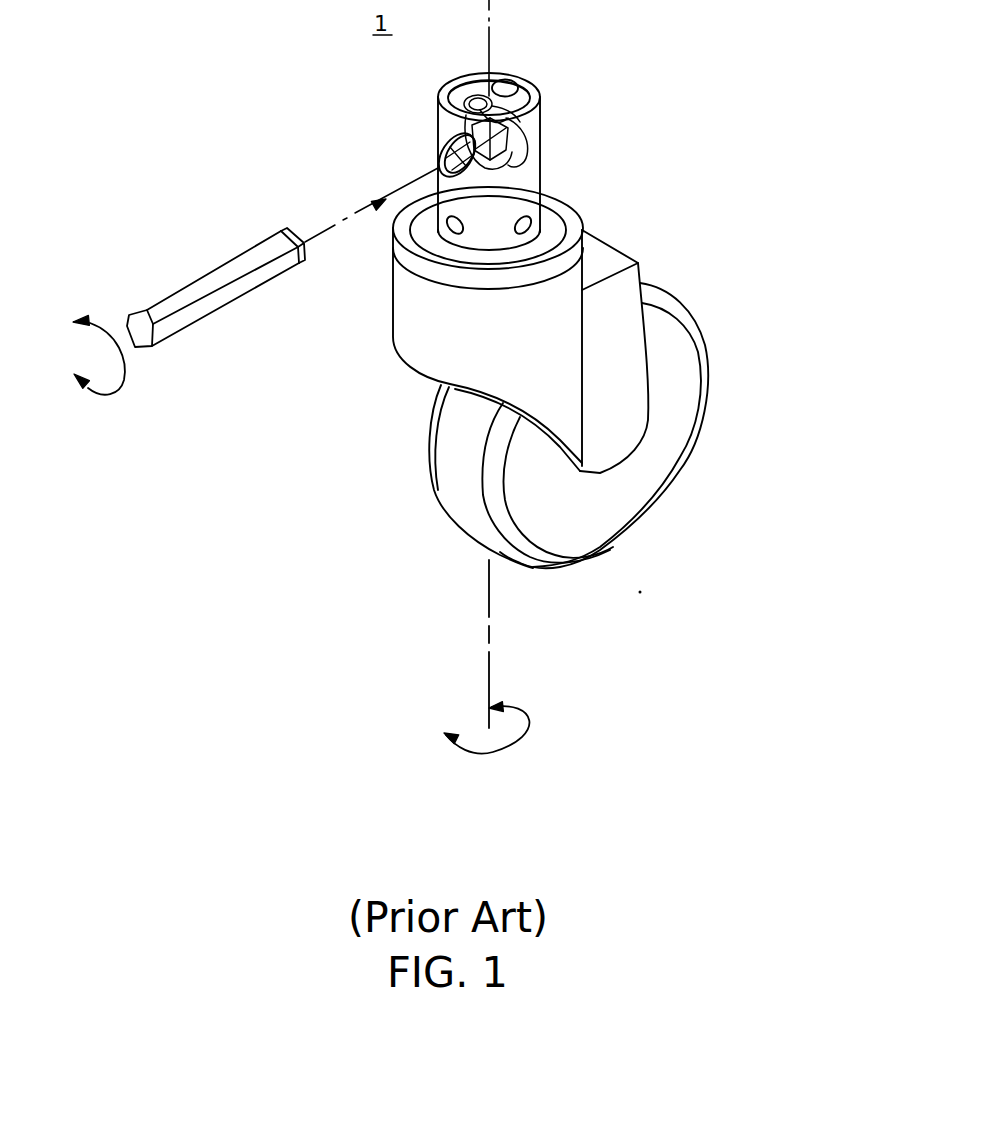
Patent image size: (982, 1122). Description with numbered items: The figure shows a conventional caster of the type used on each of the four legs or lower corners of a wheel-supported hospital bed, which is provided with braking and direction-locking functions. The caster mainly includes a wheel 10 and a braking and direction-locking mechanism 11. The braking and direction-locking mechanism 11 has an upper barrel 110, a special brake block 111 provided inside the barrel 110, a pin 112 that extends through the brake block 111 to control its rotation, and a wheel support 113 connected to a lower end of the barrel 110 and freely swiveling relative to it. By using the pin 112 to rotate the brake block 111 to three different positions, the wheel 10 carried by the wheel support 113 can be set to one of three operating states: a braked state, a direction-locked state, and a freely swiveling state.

The wheel 10 is at (656, 466).
The braking and direction-locking mechanism 11 is at (372, 204).
The upper barrel 110 is at (538, 105).
The brake block 111 is at (510, 145).
The pin 112 is at (200, 283).
The wheel support 113 is at (486, 351).